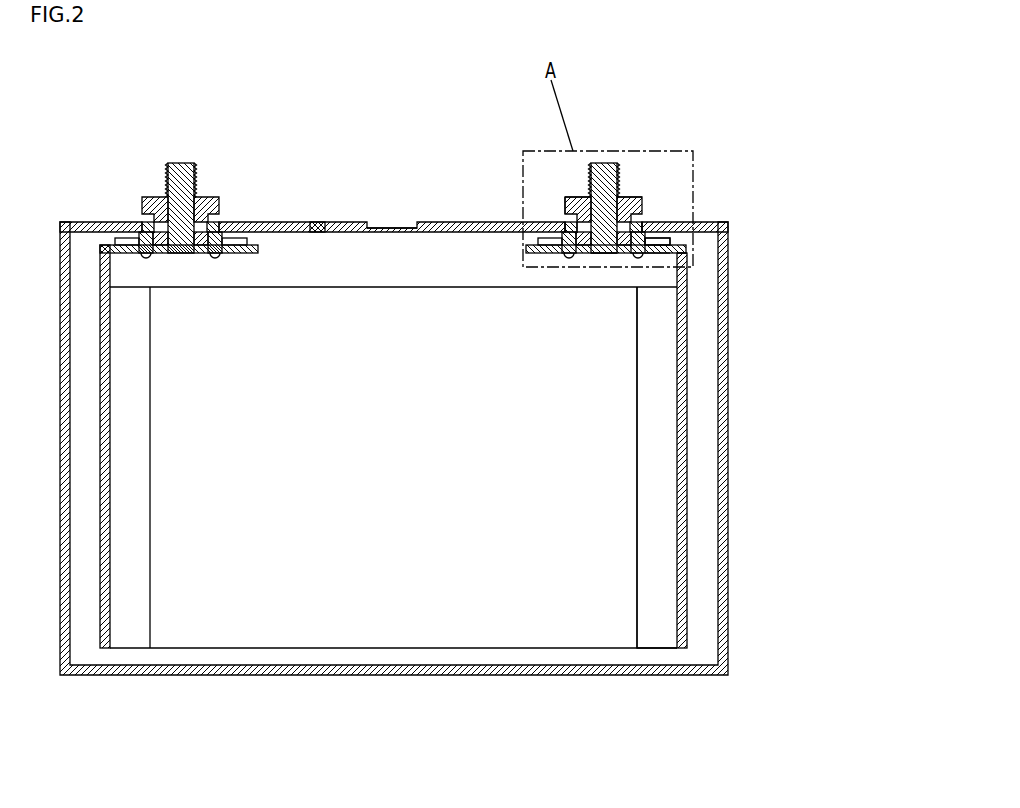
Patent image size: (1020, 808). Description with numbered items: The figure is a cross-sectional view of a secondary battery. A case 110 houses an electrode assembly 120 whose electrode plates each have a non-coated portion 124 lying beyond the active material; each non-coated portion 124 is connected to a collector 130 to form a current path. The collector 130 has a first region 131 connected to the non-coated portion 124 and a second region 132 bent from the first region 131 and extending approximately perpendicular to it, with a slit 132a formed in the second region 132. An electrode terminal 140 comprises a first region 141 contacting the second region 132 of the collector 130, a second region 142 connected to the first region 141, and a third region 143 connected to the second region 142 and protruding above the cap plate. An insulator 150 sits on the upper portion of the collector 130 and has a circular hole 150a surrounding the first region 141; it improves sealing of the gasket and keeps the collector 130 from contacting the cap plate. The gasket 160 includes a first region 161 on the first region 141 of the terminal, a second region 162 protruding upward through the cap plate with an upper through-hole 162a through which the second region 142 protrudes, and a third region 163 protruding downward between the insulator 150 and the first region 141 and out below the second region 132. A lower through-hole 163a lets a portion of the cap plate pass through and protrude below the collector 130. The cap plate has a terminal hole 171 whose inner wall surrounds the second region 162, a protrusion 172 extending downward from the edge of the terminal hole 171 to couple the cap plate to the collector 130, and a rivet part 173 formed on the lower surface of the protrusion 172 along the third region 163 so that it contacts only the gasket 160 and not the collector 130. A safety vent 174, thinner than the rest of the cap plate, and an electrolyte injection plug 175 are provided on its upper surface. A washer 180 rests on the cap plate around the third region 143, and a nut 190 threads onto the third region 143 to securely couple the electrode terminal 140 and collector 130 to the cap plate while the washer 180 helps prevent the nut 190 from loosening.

The case 110 is at (727, 561).
The electrode assembly 120 is at (541, 620).
The non-coated portion 124 is at (663, 632).
The collector 130 is at (695, 412).
The first region 131 is at (687, 477).
The second region 132 is at (668, 238).
The slit 132a is at (688, 265).
The electrode terminal 140 is at (614, 216).
The first region 141 is at (653, 222).
The second region 142 is at (617, 197).
The third region 143 is at (603, 163).
The insulator 150 is at (700, 232).
The hole 150a is at (682, 240).
The gasket 160 is at (562, 222).
The first region 161 is at (555, 228).
The second region 162 is at (567, 207).
The upper through-hole 162a is at (582, 197).
The third region 163 is at (525, 250).
The lower through-hole 163a is at (563, 257).
The terminal hole 171 is at (605, 253).
The protrusion 172 is at (634, 253).
The rivet part 173 is at (650, 256).
The safety vent 174 is at (372, 228).
The electrolyte injection plug 175 is at (316, 222).
The washer 180 is at (666, 236).
The nut 190 is at (634, 203).